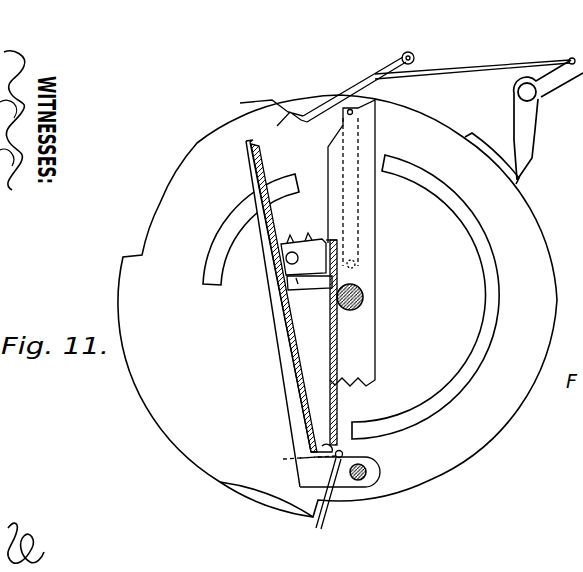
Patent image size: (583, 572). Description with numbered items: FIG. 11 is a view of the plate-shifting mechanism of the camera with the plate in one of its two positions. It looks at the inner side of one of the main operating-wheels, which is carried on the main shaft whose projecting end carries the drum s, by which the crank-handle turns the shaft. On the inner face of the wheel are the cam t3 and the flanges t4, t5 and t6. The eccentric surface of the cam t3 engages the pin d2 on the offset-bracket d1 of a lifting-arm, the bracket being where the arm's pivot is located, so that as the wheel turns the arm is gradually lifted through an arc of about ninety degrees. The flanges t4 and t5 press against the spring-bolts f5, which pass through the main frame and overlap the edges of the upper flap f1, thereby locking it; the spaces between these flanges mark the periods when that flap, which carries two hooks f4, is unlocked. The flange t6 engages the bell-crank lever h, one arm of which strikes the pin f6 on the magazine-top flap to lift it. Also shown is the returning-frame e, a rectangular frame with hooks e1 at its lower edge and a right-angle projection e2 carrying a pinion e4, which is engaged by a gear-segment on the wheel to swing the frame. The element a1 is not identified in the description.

The hooks f4 is at (265, 105).
The spring-bolts f5 is at (340, 98).
The flap f1 is at (384, 74).
The pin f6 is at (569, 59).
The bell-crank lever h is at (547, 88).
The flange t6 is at (497, 164).
The flange t5 is at (231, 218).
The flange t4 is at (499, 265).
The cam t3 is at (268, 438).
The pinion e4 is at (300, 238).
The right-angle projection e2 is at (320, 272).
The returning-frame e is at (330, 353).
The hooks e1 is at (307, 430).
The bar a1 is at (351, 243).
The drum s is at (364, 297).
The offset-bracket d1 is at (345, 497).
The pin d2 is at (322, 499).